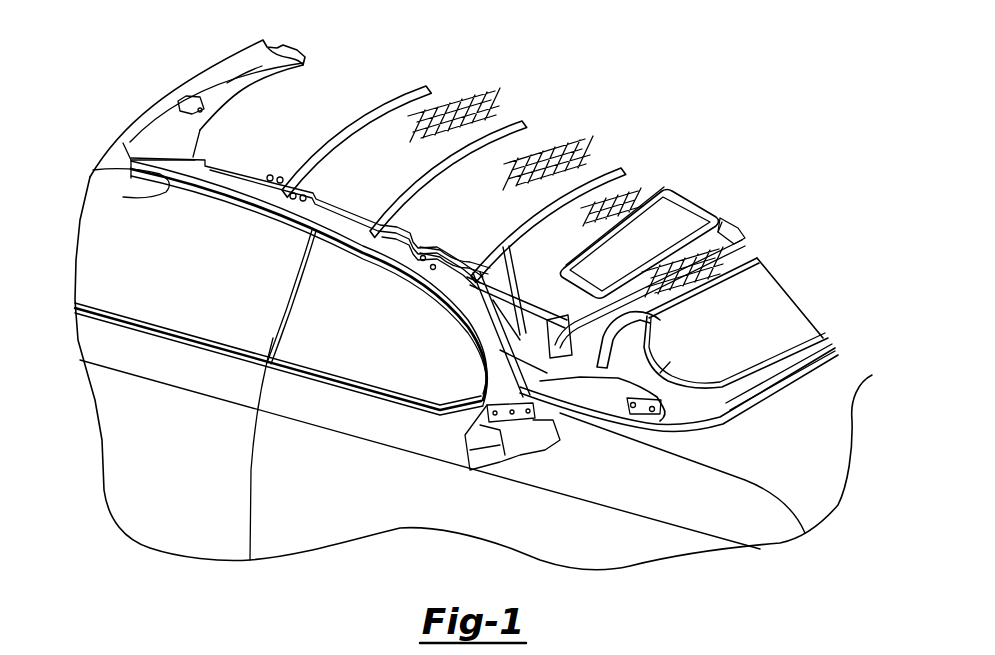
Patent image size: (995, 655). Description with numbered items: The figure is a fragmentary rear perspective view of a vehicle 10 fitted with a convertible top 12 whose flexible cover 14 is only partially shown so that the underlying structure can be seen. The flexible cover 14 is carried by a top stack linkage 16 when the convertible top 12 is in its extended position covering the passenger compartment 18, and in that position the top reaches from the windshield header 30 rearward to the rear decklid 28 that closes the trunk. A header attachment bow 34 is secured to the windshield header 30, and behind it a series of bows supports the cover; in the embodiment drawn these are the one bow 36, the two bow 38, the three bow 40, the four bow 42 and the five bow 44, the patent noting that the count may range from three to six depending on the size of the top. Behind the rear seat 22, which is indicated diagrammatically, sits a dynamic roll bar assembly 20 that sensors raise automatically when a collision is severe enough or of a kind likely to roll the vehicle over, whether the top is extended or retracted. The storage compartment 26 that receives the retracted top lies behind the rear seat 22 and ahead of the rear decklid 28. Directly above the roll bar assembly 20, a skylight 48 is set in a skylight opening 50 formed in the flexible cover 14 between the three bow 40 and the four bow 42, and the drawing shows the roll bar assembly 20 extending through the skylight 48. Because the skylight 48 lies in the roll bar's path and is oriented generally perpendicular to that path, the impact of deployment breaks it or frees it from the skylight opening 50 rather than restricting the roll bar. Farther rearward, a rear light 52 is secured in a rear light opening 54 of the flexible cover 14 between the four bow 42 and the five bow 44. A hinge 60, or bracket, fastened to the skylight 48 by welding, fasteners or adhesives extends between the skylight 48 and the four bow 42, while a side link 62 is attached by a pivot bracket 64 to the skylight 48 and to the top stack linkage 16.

The vehicle 10 is at (160, 436).
The convertible top 12 is at (191, 87).
The flexible cover 14 is at (470, 112).
The top stack linkage 16 is at (365, 243).
The passenger compartment 18 is at (243, 305).
The dynamic roll bar assembly 20 is at (640, 310).
The rear seat 22 is at (632, 350).
The storage compartment 26 is at (683, 400).
The rear decklid 28 is at (850, 372).
The windshield header 30 is at (124, 197).
The header attachment bow 34 is at (167, 140).
The one bow 36 is at (328, 150).
The two bow 38 is at (410, 190).
The three bow 40 is at (510, 243).
The four bow 42 is at (713, 255).
The five bow 44 is at (822, 345).
The skylight 48 is at (675, 210).
The skylight opening 50 is at (648, 200).
The rear light 52 is at (781, 300).
The rear light opening 54 is at (748, 259).
The hinge 60 is at (722, 225).
The side link 62 is at (550, 302).
The pivot bracket 64 is at (570, 277).